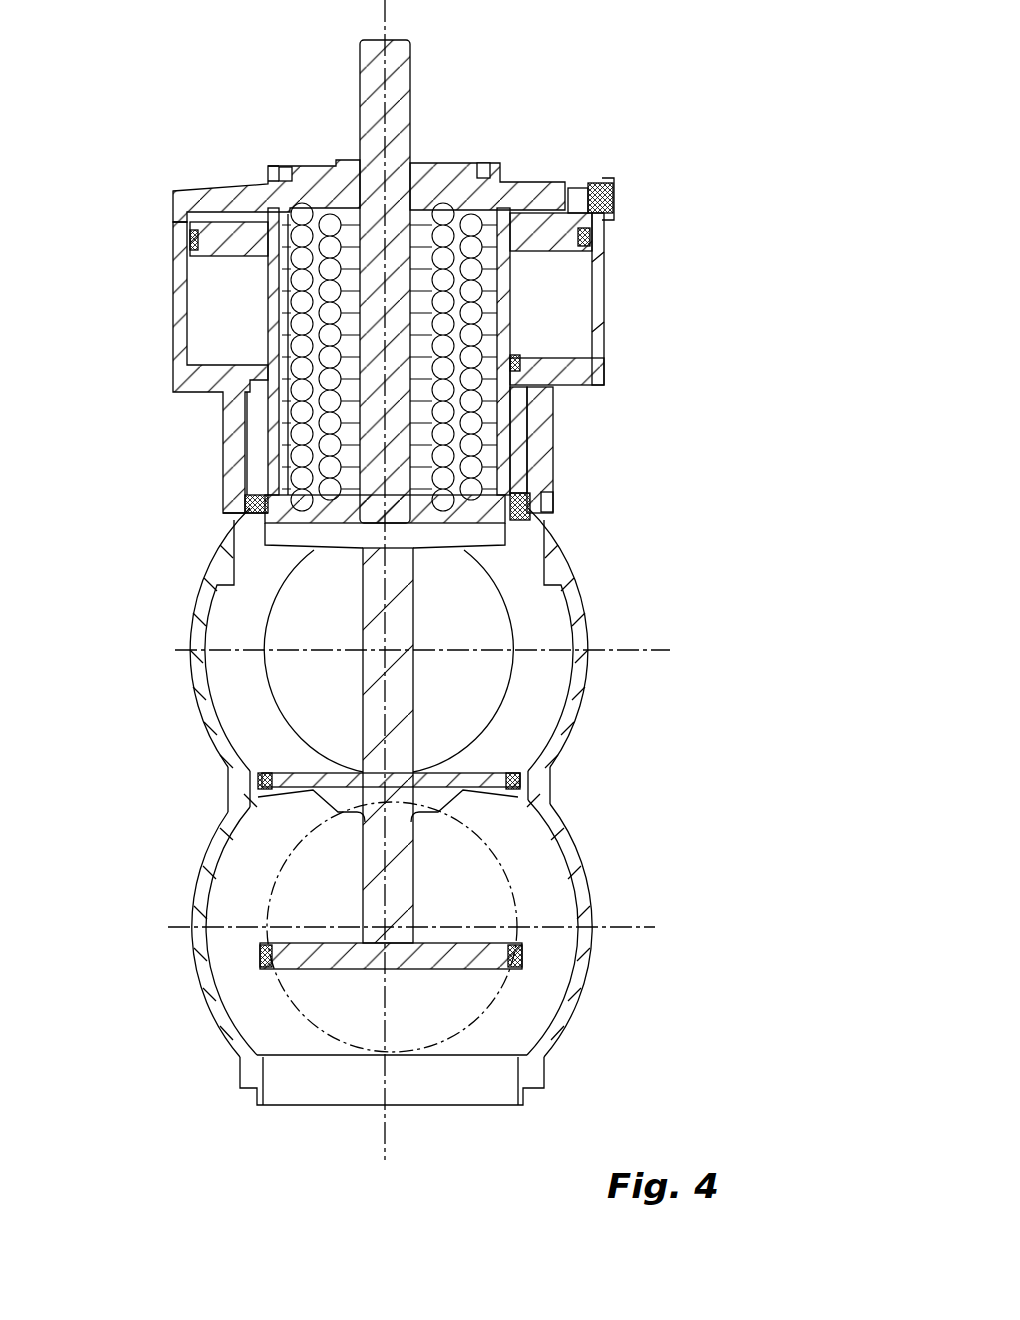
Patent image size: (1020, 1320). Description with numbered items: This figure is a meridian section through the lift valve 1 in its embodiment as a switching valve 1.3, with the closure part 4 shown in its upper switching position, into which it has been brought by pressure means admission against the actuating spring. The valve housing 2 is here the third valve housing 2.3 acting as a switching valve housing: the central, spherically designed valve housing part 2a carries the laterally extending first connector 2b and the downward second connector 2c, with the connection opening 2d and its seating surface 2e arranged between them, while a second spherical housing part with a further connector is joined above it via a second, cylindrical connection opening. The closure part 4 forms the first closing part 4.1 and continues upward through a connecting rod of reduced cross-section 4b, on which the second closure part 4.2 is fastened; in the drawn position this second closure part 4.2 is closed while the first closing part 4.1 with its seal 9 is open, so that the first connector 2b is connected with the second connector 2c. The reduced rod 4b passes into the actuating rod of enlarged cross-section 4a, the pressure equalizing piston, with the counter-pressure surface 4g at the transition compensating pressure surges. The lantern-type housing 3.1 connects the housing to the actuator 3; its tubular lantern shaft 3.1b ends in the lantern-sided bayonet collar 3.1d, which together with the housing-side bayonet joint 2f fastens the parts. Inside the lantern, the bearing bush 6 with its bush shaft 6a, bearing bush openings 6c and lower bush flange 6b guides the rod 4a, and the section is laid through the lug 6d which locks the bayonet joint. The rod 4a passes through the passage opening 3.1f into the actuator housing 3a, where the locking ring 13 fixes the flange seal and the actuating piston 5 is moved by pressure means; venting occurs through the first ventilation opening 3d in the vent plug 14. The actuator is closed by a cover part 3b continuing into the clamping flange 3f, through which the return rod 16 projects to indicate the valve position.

The lift valve 1 is at (449, 608).
The switching valve 1.3 is at (604, 578).
The valve housing 2 is at (449, 835).
The third valve housing 2.3 is at (222, 774).
The valve housing part 2a is at (575, 982).
The first connector 2b is at (527, 927).
The second connector 2c is at (262, 1104).
The connection opening 2d is at (388, 1078).
The seating surface 2e is at (312, 1052).
The bayonet joint 2f is at (170, 550).
The first actuator 3 is at (423, 326).
The actuator housing 3a is at (597, 325).
The bonnet flange 3b is at (497, 165).
The first ventilation opening 3d is at (592, 190).
The clamping flange 3f is at (272, 168).
The lantern-type housing 3.1 is at (320, 358).
The lantern shaft 3.1b is at (218, 420).
The lantern-sided bayonet collar 3.1d is at (206, 512).
The passage opening 3.1f is at (510, 362).
The closure part 4 is at (446, 756).
The actuating rod of enlarged cross-section 4a is at (242, 345).
The connecting rod of reduced cross-section 4b is at (387, 667).
The counter-pressure surface 4g is at (450, 547).
The first closing part 4.1 is at (282, 966).
The second closure part 4.2 is at (295, 792).
The actuating piston 5 is at (233, 232).
The bearing bush 6 is at (530, 440).
The bush shaft 6a is at (518, 410).
The bush flange 6b is at (522, 522).
The bearing bush openings 6c is at (255, 450).
The lug 6d is at (548, 504).
The seal ring 9 is at (265, 955).
The locking ring 13 is at (592, 378).
The vent plug 14 is at (614, 186).
The return rod 16 is at (385, 124).